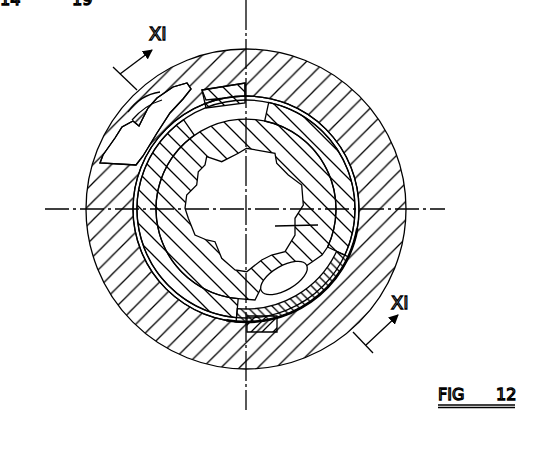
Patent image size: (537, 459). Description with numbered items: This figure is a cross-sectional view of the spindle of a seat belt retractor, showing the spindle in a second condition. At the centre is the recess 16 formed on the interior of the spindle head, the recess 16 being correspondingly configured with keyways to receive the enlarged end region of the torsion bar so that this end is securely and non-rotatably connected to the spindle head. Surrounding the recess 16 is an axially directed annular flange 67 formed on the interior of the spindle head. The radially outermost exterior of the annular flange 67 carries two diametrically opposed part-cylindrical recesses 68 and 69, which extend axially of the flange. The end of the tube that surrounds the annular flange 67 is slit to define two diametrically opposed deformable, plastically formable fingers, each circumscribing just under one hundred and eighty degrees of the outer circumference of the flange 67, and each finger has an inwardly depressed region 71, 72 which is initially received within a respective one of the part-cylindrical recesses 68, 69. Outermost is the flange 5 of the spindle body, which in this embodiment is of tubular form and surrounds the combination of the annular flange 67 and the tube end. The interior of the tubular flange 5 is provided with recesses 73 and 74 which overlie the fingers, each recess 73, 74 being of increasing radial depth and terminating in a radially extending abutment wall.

The flange 5 is at (292, 60).
The recess 16 is at (300, 241).
The annular flange 67 is at (352, 160).
The part-cylindrical recess 68 is at (335, 98).
The part-cylindrical recess 69 is at (284, 326).
The inwardly depressed region 71 is at (360, 275).
The inwardly depressed region 72 is at (97, 163).
The recess 73 is at (337, 337).
The recess 74 is at (160, 128).